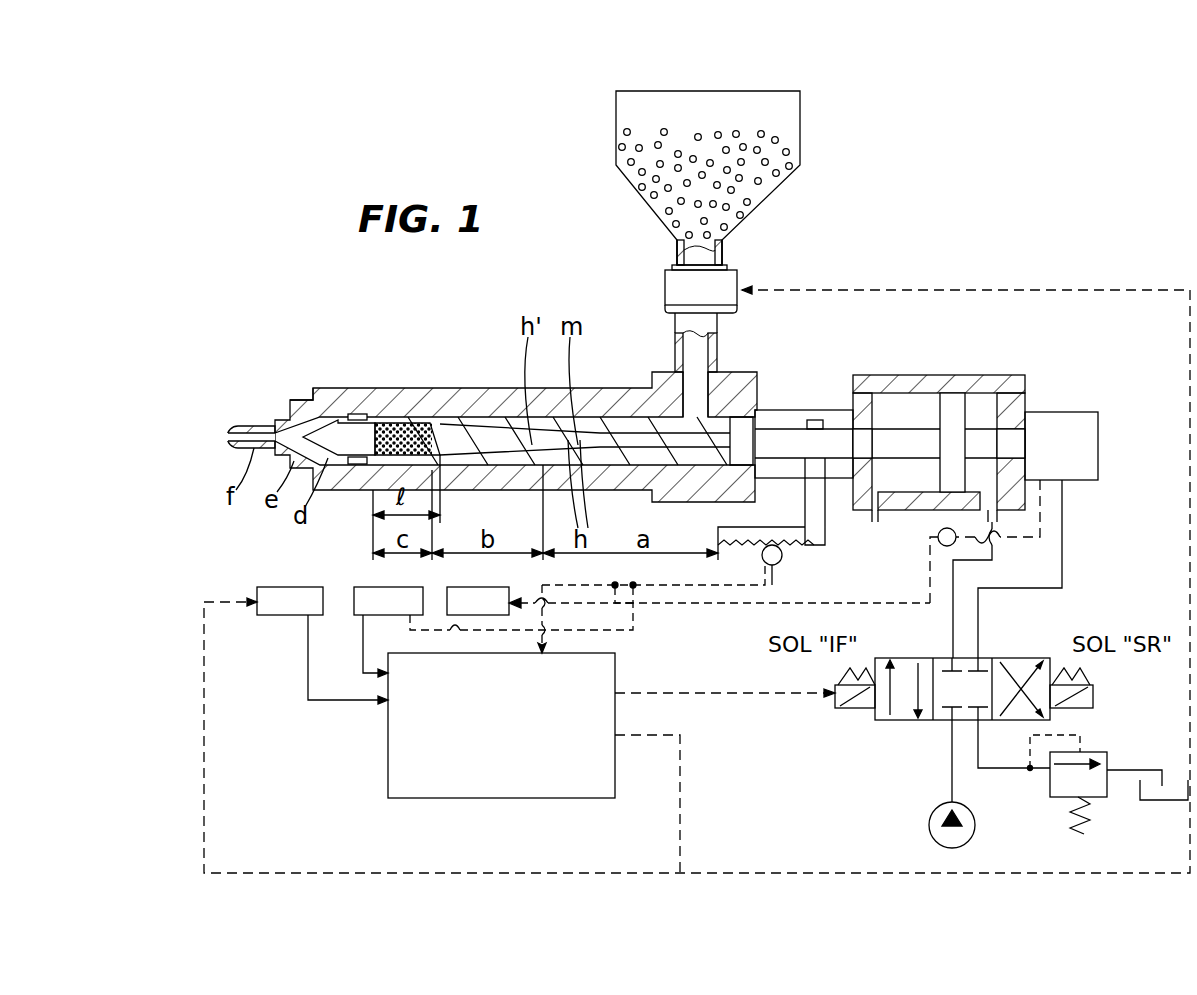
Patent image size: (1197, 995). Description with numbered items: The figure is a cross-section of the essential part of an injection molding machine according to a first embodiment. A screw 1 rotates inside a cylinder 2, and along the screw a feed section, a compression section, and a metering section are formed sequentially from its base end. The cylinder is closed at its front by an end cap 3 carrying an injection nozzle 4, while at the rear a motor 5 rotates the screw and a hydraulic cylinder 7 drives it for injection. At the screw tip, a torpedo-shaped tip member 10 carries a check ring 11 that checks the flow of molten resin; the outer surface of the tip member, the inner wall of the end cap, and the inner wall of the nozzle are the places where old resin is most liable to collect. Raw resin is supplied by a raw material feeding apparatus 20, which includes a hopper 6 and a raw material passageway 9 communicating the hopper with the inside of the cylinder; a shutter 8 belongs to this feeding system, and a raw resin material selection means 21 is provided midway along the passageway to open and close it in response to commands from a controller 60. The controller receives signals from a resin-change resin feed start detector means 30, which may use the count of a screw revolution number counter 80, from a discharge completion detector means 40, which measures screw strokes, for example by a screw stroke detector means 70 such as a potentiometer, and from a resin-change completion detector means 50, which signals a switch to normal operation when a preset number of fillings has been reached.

The screw 1 is at (482, 435).
The cylinder 2 is at (428, 395).
The end cap 3 is at (325, 392).
The injection nozzle 4 is at (258, 428).
The motor 5 is at (1078, 420).
The hopper 6 is at (728, 106).
The hydraulic cylinder 7 is at (955, 385).
The shutter 8 is at (356, 466).
The raw material passageway 9 is at (690, 355).
The torpedo-shaped tip member 10 is at (322, 432).
The check ring 11 is at (356, 413).
The raw material feeding apparatus 20 is at (616, 126).
The raw resin material selection means 21 is at (682, 290).
The resin-change resin feed start detector means 30 is at (460, 590).
The discharge completion detector means 40 is at (380, 590).
The resin-change completion detector means 50 is at (297, 588).
The controller 60 is at (402, 732).
The screw stroke detector means 70 is at (782, 557).
The screw revolution number counter 80 is at (930, 542).